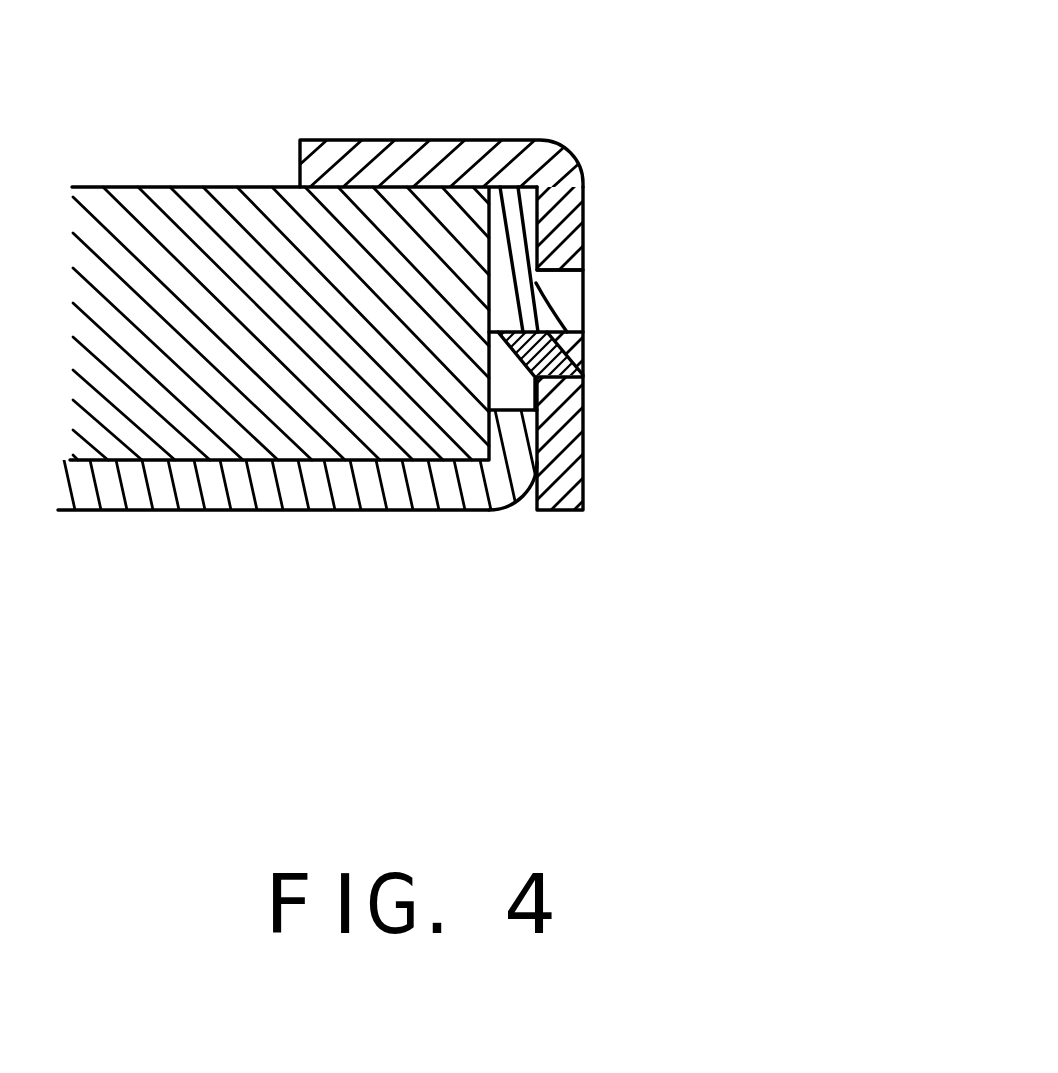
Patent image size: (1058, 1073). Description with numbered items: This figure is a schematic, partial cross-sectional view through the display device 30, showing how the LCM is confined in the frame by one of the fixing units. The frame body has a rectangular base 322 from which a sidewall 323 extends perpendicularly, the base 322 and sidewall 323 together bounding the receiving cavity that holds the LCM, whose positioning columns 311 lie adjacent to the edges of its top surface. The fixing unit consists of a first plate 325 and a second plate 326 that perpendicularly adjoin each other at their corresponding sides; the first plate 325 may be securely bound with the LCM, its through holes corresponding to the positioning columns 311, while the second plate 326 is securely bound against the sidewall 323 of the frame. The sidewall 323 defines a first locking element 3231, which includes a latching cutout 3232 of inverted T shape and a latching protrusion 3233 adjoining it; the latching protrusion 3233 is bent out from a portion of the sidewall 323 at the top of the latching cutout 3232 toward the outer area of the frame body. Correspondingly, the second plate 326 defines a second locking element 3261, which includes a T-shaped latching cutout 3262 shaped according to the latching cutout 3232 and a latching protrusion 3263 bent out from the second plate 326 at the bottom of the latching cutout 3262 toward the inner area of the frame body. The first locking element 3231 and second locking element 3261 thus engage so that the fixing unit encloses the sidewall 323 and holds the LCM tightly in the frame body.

The display device 30 is at (383, 80).
The positioning column 311 is at (173, 215).
The base 322 is at (157, 490).
The first plate 325 is at (423, 163).
The sidewall 323 is at (525, 212).
The second locking element 3261 is at (697, 337).
The latching cutout 3262 is at (567, 293).
The latching protrusion 3263 is at (575, 372).
The second plate 326 is at (557, 483).
The first locking element 3231 is at (419, 437).
The latching cutout 3232 is at (513, 394).
The latching protrusion 3233 is at (525, 305).